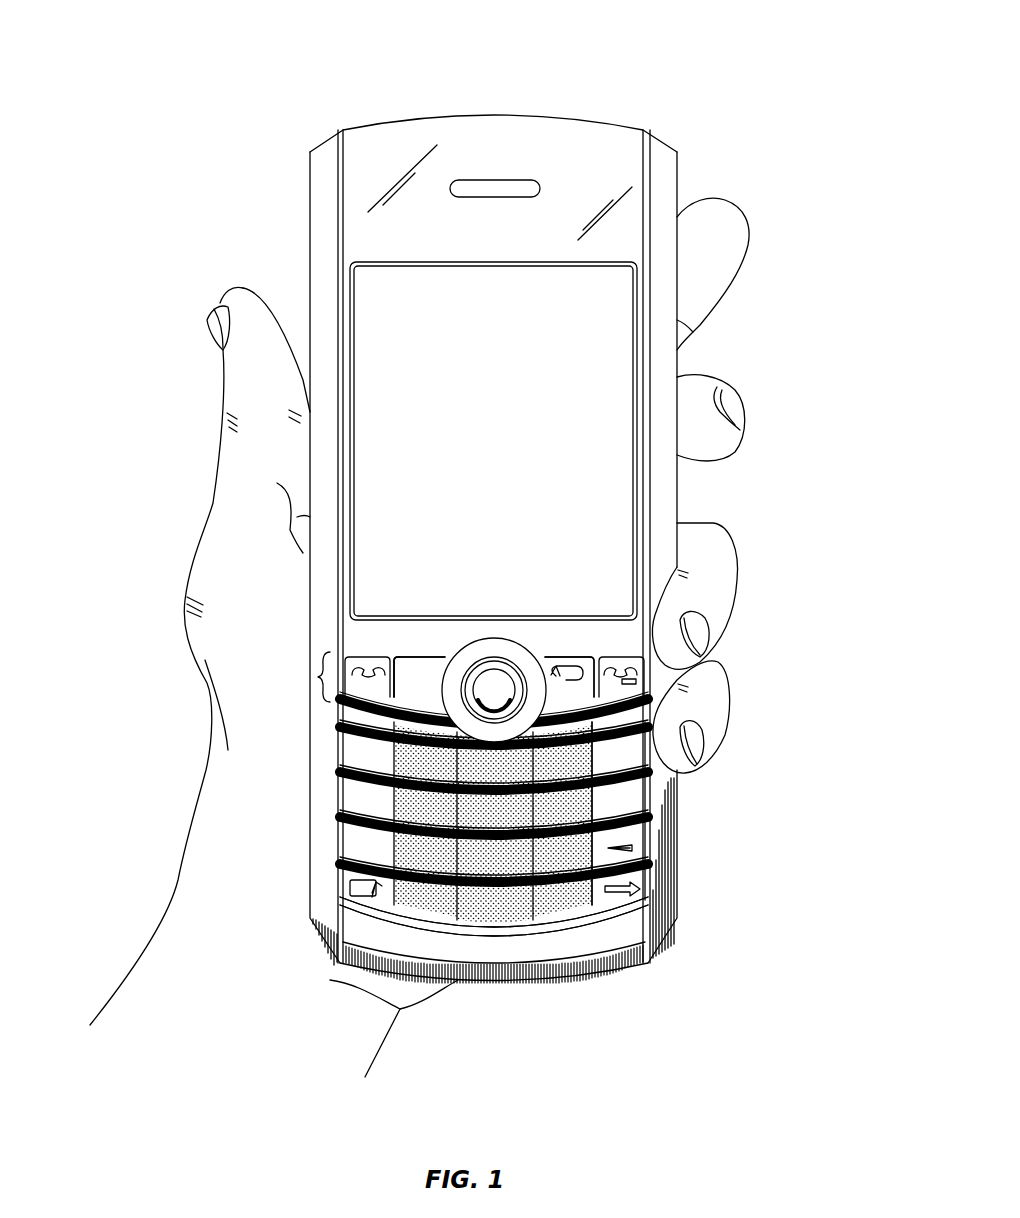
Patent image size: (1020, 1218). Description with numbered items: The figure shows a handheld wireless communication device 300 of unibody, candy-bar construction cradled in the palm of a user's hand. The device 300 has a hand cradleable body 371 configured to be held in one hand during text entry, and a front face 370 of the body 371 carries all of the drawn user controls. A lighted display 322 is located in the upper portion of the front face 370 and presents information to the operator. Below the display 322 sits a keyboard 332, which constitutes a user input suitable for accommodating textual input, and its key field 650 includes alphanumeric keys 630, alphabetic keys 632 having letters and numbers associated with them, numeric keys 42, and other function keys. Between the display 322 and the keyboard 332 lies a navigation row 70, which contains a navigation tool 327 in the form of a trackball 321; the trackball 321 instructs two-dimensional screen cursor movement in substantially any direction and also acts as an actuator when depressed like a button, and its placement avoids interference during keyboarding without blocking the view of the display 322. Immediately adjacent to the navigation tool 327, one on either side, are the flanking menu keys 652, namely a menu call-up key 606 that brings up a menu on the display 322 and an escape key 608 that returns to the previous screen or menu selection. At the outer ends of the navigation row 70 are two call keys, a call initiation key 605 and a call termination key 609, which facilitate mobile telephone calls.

The handheld wireless communication device 300 is at (468, 540).
The hand cradleable body 371 is at (305, 156).
The front face 370 is at (662, 190).
The display 322 is at (378, 300).
The menu keys 652 is at (560, 655).
The menu call-up key 606 is at (415, 667).
The escape key 608 is at (573, 667).
The navigation row 70 is at (316, 677).
The call initiation key 605 is at (367, 675).
The call termination key 609 is at (637, 686).
The trackball 321 is at (493, 684).
The alphabetic keys 632 is at (340, 783).
The navigation tool 327 is at (622, 778).
The alphanumeric keys 630 is at (578, 843).
The key field 650 is at (355, 903).
The numeric keys 42 is at (510, 900).
The keyboard 332 is at (505, 947).